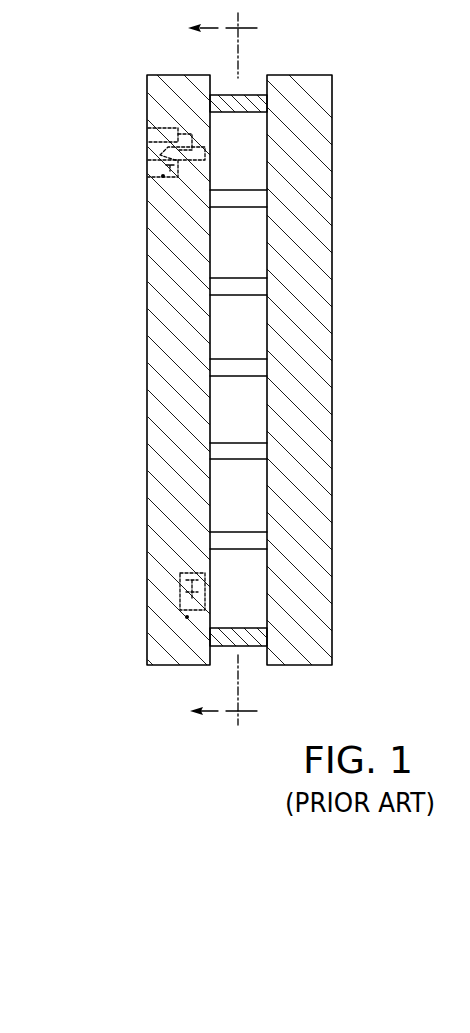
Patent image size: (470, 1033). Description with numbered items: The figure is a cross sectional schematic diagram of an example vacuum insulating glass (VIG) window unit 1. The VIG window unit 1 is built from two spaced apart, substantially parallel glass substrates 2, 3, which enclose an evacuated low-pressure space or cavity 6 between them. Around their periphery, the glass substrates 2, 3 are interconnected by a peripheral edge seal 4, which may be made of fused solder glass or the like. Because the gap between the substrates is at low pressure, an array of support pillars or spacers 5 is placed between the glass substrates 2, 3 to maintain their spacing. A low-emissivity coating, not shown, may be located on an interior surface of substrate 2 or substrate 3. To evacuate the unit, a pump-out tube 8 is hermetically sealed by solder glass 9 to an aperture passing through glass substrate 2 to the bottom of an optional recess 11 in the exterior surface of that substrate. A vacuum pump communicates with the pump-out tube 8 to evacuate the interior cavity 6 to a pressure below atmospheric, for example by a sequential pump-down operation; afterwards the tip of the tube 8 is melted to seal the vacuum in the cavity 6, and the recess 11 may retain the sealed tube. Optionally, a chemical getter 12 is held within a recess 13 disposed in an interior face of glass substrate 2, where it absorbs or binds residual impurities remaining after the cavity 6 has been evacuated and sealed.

The VIG window unit 1 is at (257, 378).
The glass substrate 2 is at (148, 415).
The glass substrate 3 is at (303, 304).
The peripheral edge seal 4 is at (250, 102).
The support pillars/spacers 5 is at (242, 368).
The evacuated low-pressure space/cavity 6 is at (225, 483).
The pump-out tube 8 is at (160, 150).
The solder glass 9 is at (160, 138).
The recess 11 is at (162, 183).
The chemical getter 12 is at (182, 585).
The recess 13 is at (185, 621).